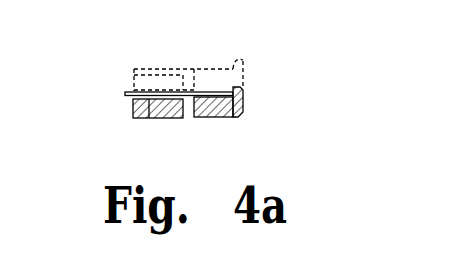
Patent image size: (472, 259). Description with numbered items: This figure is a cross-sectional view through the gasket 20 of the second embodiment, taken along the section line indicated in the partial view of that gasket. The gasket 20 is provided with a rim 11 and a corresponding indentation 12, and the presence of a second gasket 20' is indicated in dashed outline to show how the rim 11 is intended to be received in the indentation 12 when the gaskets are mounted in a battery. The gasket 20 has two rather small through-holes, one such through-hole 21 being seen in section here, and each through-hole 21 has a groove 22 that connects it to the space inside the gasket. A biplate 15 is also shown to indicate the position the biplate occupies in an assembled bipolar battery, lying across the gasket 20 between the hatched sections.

The gasket 20 is at (144, 45).
The second gasket 20' is at (179, 54).
The rim 11 is at (243, 65).
The biplate 15 is at (125, 95).
The groove 22 is at (153, 118).
The through-hole 21 is at (190, 103).
The indentation 12 is at (236, 117).